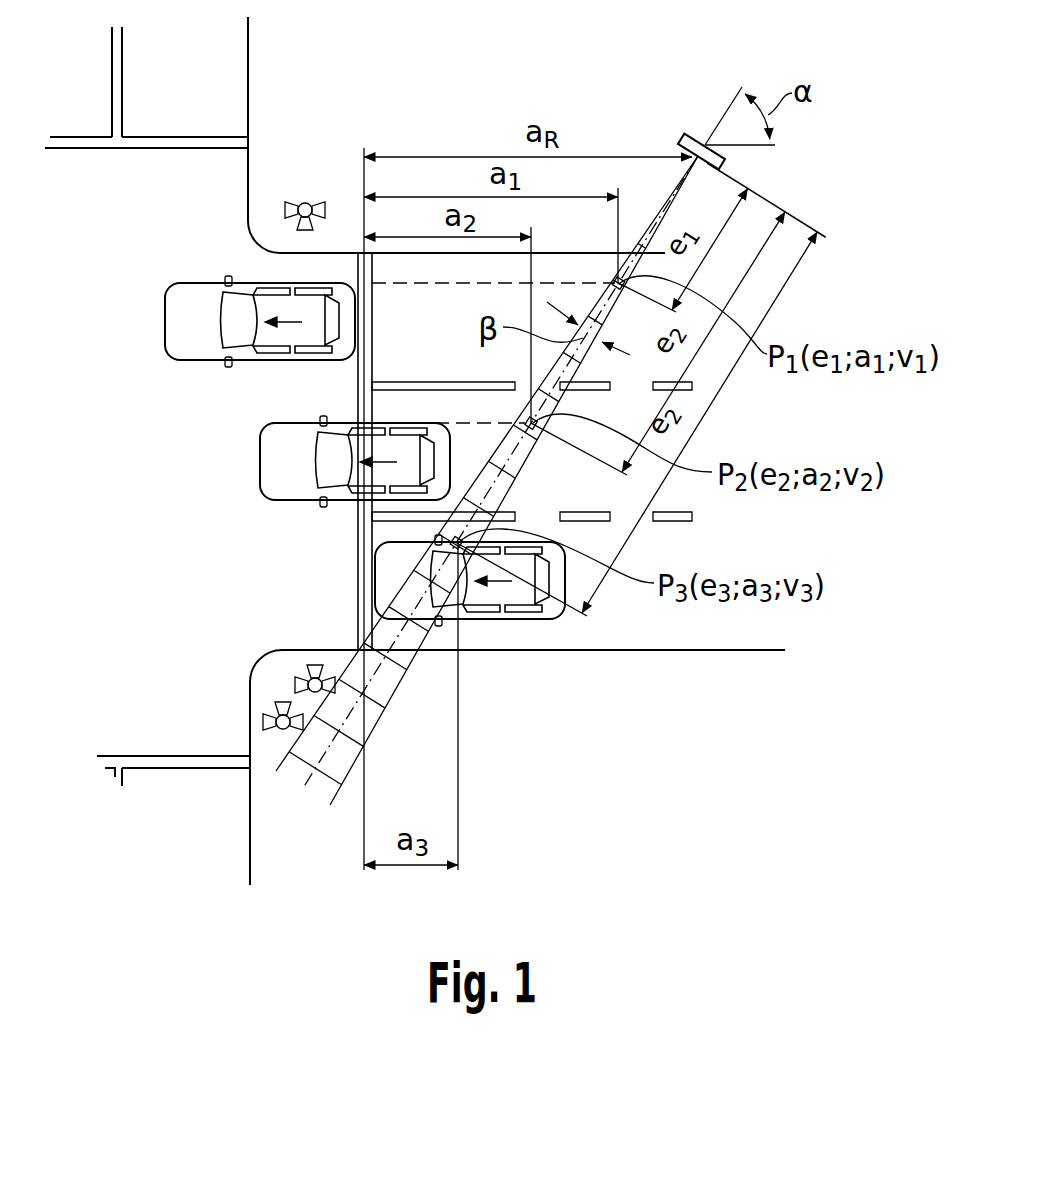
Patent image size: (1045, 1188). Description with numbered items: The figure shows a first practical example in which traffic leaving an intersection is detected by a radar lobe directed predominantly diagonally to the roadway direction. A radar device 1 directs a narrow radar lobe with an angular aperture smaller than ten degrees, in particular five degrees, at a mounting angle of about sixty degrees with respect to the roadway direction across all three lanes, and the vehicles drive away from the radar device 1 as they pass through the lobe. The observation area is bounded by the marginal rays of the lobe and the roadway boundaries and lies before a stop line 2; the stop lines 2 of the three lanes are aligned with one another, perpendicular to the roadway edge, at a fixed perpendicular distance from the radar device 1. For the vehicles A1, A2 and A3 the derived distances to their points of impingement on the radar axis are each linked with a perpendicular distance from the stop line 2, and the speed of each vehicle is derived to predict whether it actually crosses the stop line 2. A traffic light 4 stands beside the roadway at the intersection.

The radar device 1 is at (698, 142).
The stop line 2 is at (357, 262).
The traffic light 4 is at (299, 202).
The vehicle A1 is at (260, 321).
The vehicle A2 is at (355, 461).
The vehicle A3 is at (470, 580).